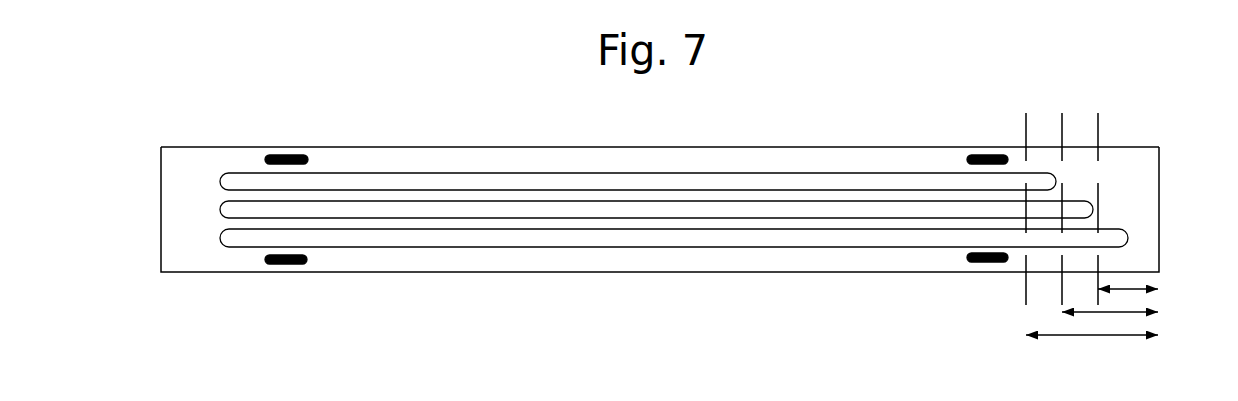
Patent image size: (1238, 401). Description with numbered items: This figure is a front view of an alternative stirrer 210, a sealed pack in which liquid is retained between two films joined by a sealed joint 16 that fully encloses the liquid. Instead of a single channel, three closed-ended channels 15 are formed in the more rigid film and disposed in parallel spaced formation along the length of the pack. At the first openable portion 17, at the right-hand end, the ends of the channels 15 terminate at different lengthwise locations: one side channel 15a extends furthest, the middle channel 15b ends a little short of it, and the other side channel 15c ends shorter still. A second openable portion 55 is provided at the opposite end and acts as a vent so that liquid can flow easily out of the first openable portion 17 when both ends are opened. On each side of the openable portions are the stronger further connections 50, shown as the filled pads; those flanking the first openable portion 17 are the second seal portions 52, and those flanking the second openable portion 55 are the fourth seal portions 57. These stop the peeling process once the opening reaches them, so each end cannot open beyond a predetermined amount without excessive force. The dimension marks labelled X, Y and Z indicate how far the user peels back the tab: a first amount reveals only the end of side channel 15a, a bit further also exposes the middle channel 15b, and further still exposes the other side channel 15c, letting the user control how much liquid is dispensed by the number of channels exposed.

The stirrer 210 is at (845, 108).
The second openable portion 55 is at (187, 137).
The sealed joint 16 is at (704, 157).
The channels 15 is at (596, 238).
The side channel 15a is at (445, 236).
The middle channel 15b is at (420, 208).
The other side channel 15c is at (473, 180).
The further connections 50 is at (277, 135).
The fourth seal portions 57 is at (295, 157).
The second seal portions 52 is at (980, 155).
The first openable portion 17 is at (1148, 122).